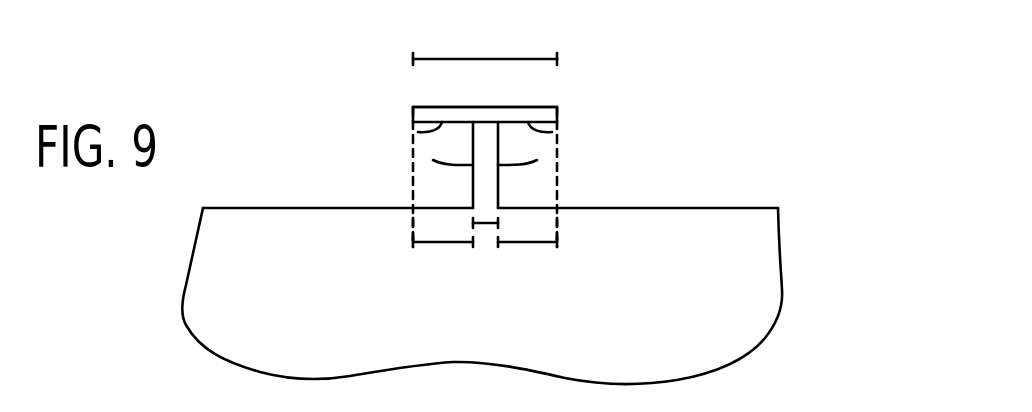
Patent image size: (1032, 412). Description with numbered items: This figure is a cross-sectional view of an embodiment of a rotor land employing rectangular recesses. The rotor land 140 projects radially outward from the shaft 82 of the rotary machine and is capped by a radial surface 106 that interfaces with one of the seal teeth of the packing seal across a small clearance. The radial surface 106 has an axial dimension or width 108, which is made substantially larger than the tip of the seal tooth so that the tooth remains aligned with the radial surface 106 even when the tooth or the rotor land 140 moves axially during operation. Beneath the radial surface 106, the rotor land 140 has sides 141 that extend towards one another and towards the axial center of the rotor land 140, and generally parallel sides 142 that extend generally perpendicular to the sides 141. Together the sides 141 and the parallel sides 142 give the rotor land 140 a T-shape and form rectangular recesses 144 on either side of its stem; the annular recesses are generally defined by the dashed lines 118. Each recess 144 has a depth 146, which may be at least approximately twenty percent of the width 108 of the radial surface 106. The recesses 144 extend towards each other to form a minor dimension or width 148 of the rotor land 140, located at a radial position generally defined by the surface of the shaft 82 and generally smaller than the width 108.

The shaft 82 is at (782, 263).
The radial surface 106 is at (550, 107).
The width 108 is at (485, 57).
The dashed lines 118 is at (412, 219).
The rotor land 140 is at (478, 117).
The sides 141 is at (418, 132).
The parallel sides 142 is at (433, 160).
The rectangular recesses 144 is at (435, 190).
The depth 146 is at (432, 245).
The width 148 is at (482, 227).